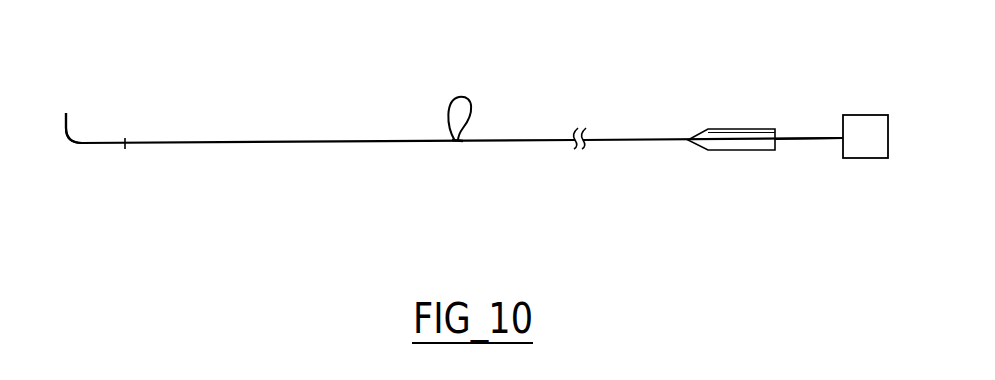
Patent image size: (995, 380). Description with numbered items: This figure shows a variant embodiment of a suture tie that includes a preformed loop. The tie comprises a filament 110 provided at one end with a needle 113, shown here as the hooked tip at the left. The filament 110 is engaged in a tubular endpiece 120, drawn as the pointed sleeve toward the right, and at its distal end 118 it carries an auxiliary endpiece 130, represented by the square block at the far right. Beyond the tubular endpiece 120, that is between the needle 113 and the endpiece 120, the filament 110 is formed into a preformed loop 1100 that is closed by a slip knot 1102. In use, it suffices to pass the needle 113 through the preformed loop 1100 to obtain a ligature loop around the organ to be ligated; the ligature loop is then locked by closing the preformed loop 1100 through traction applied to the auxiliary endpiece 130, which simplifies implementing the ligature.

The filament 110 is at (253, 145).
The needle 113 is at (64, 145).
The preformed loop 1100 is at (445, 97).
The slip knot 1102 is at (465, 150).
The tubular endpiece 120 is at (735, 147).
The distal end 118 is at (822, 128).
The auxiliary endpiece 130 is at (863, 147).